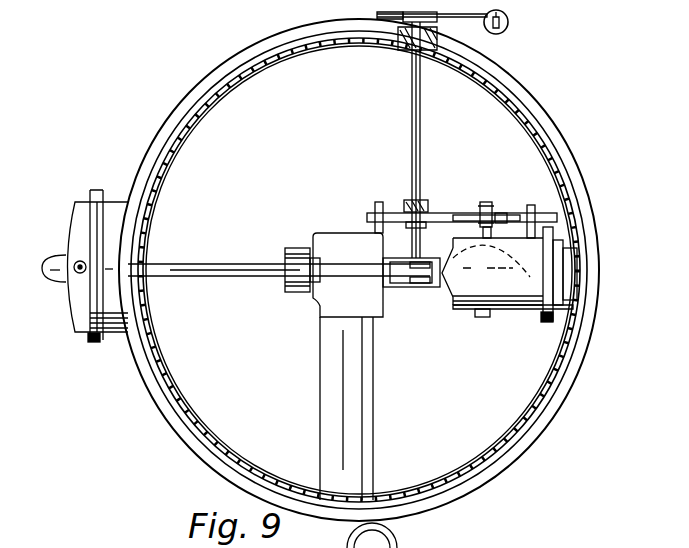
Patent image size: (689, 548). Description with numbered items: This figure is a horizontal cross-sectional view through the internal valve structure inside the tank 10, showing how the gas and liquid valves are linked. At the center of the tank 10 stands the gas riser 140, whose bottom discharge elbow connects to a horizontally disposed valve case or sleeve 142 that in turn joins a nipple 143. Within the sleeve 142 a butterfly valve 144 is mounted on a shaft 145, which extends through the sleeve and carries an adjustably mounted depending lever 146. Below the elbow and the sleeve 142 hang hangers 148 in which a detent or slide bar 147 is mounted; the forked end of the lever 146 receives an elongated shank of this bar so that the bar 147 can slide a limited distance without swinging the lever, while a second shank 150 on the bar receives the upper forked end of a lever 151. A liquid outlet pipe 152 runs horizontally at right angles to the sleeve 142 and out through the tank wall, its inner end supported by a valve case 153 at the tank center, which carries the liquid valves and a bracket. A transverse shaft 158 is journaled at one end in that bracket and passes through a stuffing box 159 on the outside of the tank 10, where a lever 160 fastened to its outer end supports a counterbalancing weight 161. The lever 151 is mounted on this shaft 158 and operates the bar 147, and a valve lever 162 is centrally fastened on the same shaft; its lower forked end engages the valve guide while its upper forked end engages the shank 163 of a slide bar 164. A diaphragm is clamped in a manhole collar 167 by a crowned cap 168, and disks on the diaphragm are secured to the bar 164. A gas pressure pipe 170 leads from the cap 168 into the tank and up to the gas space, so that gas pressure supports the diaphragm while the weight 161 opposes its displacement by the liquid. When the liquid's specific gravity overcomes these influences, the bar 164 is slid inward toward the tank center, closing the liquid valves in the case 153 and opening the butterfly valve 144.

The tank 10 is at (543, 129).
The gas riser 140 is at (432, 547).
The valve case or sleeve 142 is at (500, 312).
The nipple 143 is at (561, 270).
The butterfly valve 144 is at (442, 290).
The shaft 145 is at (493, 210).
The depending lever 146 is at (497, 212).
The detent or slide bar 147 is at (481, 210).
The hangers 148 is at (538, 211).
The second shank 150 is at (458, 212).
The lever 151 is at (455, 232).
The liquid outlet pipe 152 is at (373, 400).
The valve case 153 is at (326, 308).
The transverse shaft 158 is at (421, 146).
The stuffing box 159 is at (437, 40).
The lever 160 is at (447, 22).
The counterbalancing weight 161 is at (509, 30).
The valve lever 162 is at (419, 272).
The shank 163 is at (425, 280).
The slide bar 164 is at (258, 264).
The manhole collar 167 is at (110, 344).
The crowned cap 168 is at (73, 300).
The gas pressure pipe 170 is at (73, 262).